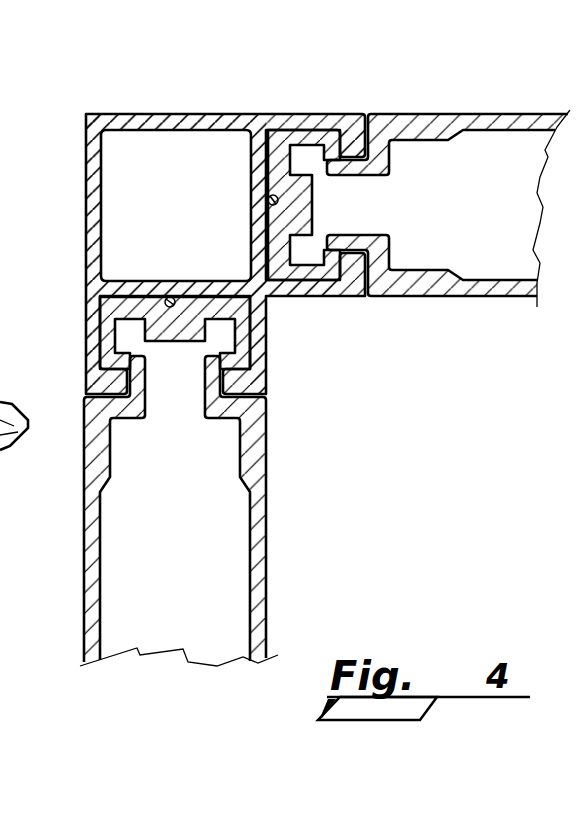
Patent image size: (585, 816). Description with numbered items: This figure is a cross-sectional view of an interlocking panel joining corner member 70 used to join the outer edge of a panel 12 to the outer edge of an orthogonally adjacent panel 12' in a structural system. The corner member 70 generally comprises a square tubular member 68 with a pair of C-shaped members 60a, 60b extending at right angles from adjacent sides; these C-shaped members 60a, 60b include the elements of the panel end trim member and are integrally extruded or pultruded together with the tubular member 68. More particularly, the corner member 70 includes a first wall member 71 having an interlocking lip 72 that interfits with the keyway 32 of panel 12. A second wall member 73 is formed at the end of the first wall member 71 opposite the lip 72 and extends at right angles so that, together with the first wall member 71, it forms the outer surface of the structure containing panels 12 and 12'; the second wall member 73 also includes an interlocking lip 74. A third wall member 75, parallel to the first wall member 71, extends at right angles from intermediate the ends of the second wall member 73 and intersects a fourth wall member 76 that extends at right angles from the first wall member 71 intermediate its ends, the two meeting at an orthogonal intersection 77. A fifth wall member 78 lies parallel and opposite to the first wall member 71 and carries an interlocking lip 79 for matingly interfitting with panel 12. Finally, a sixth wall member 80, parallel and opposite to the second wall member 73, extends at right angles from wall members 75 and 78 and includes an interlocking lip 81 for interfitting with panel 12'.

The panel 12 is at (448, 233).
The orthogonally adjacent panel 12' is at (211, 511).
The keyway 32 is at (368, 110).
The C-shaped member 60a is at (304, 104).
The C-shaped member 60b is at (74, 320).
The square tubular member 68 is at (161, 106).
The interlocking panel joining corner member 70 is at (78, 206).
The first wall member 71 is at (206, 113).
The interlocking lip 72 is at (358, 152).
The second wall member 73 is at (85, 344).
The interlocking lip 74 is at (120, 399).
The third wall member 75 is at (160, 287).
The fourth wall member 76 is at (248, 197).
The orthogonal intersection 77 is at (252, 288).
The fifth wall member 78 is at (318, 297).
The interlocking lip 79 is at (354, 267).
The sixth wall member 80 is at (267, 360).
The interlocking lip 81 is at (228, 400).